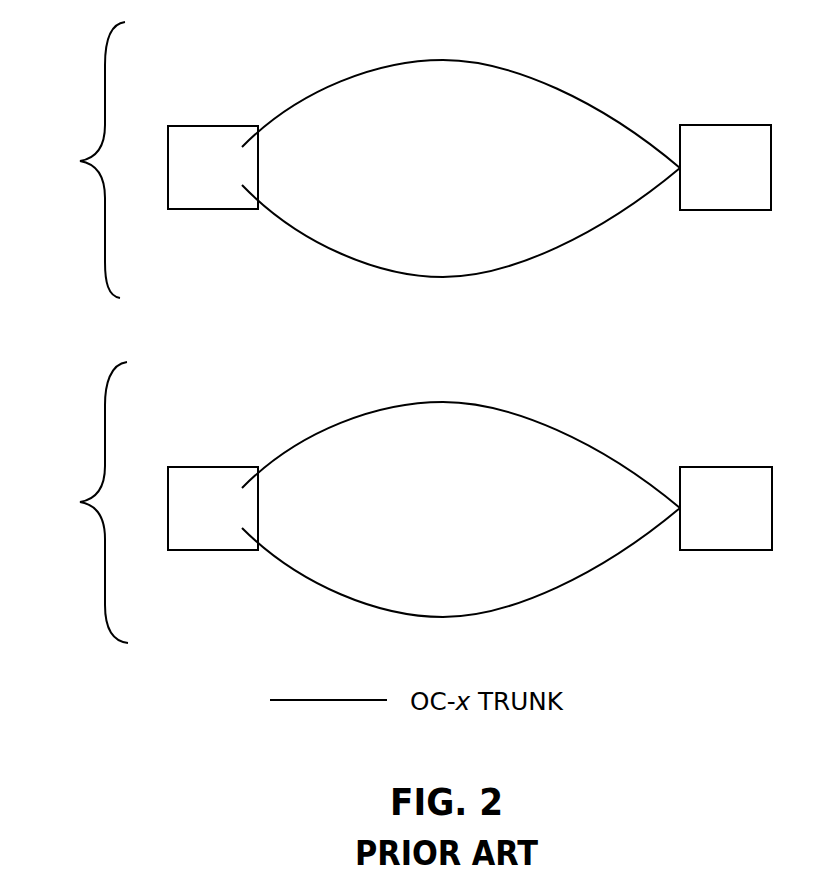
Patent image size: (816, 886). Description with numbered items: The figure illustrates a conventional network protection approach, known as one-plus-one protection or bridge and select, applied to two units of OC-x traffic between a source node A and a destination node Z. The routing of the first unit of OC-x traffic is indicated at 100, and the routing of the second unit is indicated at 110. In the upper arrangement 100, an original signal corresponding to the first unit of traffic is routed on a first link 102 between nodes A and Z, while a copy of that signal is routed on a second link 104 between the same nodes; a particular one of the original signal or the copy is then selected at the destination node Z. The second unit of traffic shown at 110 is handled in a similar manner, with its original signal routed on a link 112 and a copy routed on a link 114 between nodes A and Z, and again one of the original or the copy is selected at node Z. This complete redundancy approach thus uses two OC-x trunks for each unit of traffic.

The routing of first unit of OC-x traffic 100 is at (399, 160).
The first link 102 is at (328, 88).
The second link 104 is at (302, 230).
The routing of second unit of OC-x traffic 110 is at (400, 502).
The link 112 is at (563, 428).
The link 114 is at (593, 570).